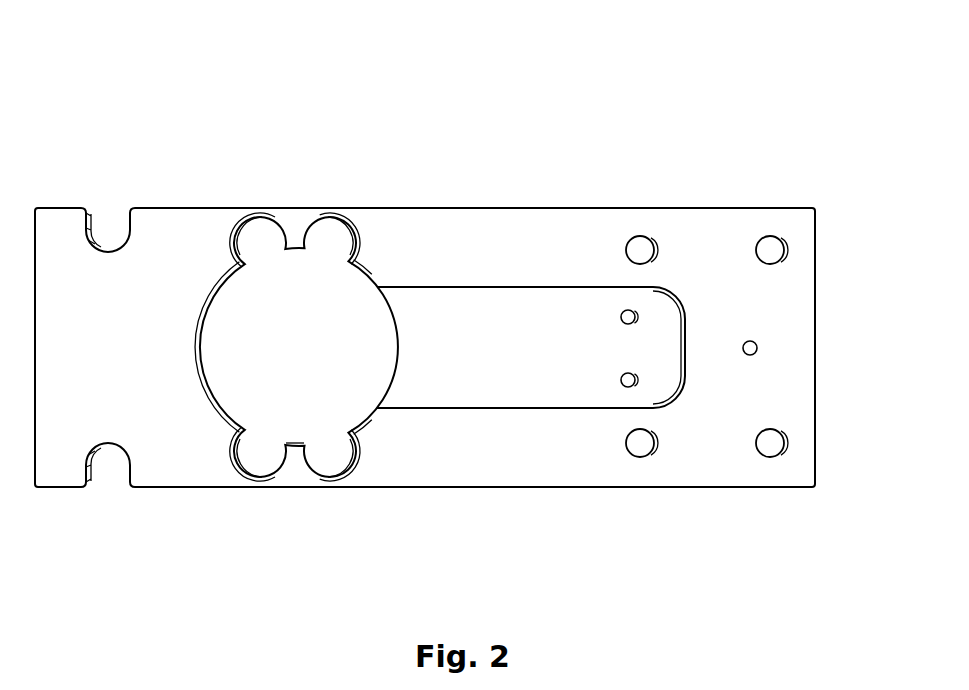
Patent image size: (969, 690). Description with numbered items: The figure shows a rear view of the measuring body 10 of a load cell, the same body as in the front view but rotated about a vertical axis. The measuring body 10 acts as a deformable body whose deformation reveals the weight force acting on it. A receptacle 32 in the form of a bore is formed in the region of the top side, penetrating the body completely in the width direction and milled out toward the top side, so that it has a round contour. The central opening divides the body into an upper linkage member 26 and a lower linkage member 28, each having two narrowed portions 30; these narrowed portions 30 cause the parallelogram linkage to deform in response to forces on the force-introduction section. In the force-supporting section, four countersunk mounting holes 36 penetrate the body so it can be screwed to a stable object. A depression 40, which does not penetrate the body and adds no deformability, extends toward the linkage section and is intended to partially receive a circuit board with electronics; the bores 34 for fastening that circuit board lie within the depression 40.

The measuring body 10 is at (473, 247).
The upper linkage member 26 is at (297, 222).
The lower linkage member 28 is at (296, 491).
The narrowed portions 30 is at (254, 204).
The receptacle 32 is at (108, 203).
The bores for circuit board 34 is at (632, 313).
The mounting holes 36 is at (641, 236).
The depression 40 is at (485, 413).